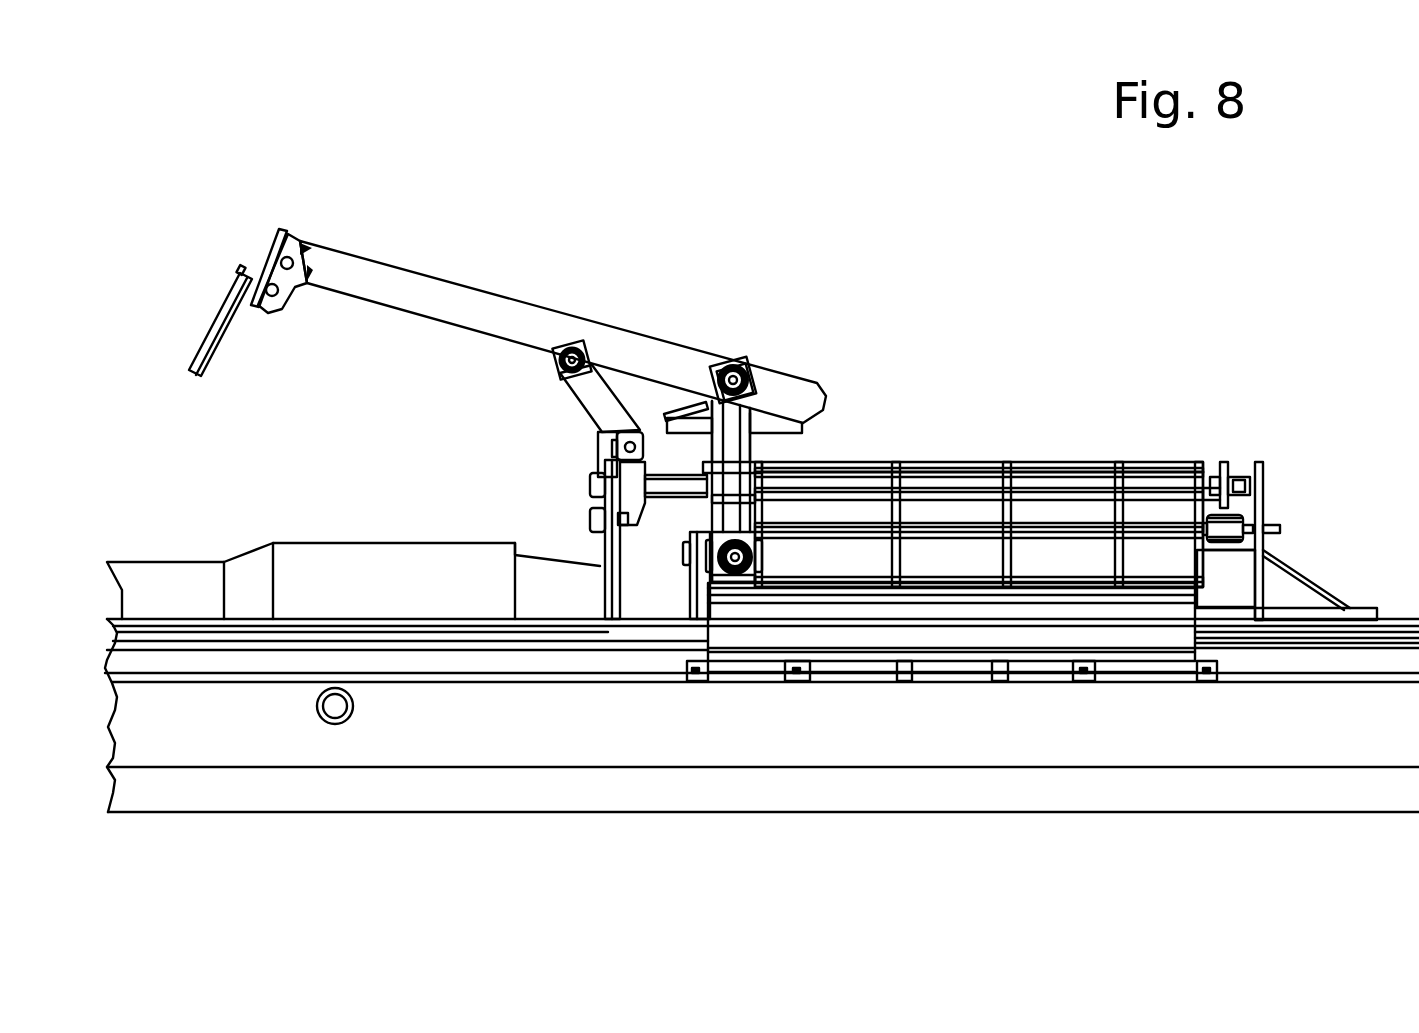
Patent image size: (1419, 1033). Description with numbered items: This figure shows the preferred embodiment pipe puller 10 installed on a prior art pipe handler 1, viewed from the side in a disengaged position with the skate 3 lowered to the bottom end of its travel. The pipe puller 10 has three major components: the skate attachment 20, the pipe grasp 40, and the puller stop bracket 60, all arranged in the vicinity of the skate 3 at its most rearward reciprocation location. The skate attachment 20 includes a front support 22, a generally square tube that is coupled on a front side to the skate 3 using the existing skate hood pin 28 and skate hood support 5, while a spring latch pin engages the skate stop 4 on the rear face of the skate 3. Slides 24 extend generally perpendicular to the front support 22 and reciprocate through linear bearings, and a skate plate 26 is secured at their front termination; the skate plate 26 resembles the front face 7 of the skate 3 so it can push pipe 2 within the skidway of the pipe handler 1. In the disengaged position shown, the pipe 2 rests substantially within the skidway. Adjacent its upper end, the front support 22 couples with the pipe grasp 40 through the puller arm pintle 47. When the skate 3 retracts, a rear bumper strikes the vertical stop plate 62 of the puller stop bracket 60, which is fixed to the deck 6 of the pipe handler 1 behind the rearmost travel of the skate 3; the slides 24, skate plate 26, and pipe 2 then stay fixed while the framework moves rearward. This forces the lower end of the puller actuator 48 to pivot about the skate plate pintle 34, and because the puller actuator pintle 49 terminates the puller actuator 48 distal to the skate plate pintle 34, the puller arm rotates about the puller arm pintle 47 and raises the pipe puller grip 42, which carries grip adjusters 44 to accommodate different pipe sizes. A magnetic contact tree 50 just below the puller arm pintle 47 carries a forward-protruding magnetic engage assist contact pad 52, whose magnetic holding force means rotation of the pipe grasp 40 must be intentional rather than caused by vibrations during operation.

The pipe handler 1 is at (649, 747).
The pipe 2 is at (340, 555).
The skate 3 is at (949, 637).
The skate stop 4 is at (1190, 510).
The skate hood support 5 is at (708, 532).
The deck 6 is at (1417, 619).
The front face 7 is at (688, 598).
The pipe puller 10 is at (354, 128).
The skate attachment 20 is at (1000, 448).
The front support 22 is at (746, 420).
The slides 24 is at (665, 483).
The skate plate 26 is at (600, 553).
The skate hood pin 28 is at (760, 553).
The skate plate pintle 34 is at (613, 445).
The pipe grasp 40 is at (465, 272).
The pipe puller grip 42 is at (263, 258).
The grip adjusters 44 is at (215, 313).
The puller arm pintle 47 is at (728, 363).
The puller actuator 48 is at (597, 400).
The puller actuator pintle 49 is at (552, 353).
The magnetic contact tree 50 is at (815, 428).
The magnetic engage assist contact pad 52 is at (680, 407).
The puller stop bracket 60 is at (1325, 576).
The vertical stop plate 62 is at (1262, 502).